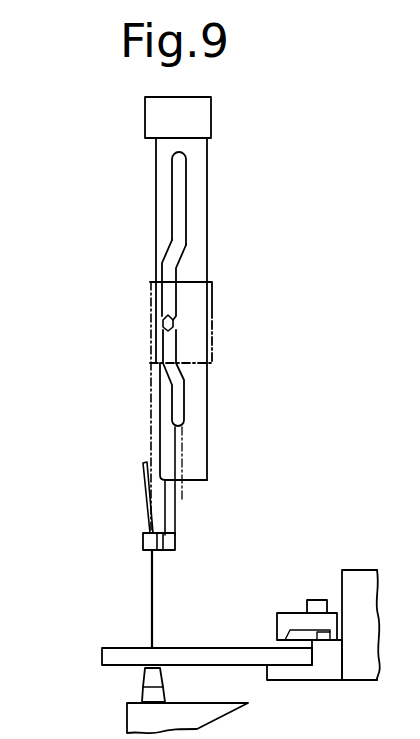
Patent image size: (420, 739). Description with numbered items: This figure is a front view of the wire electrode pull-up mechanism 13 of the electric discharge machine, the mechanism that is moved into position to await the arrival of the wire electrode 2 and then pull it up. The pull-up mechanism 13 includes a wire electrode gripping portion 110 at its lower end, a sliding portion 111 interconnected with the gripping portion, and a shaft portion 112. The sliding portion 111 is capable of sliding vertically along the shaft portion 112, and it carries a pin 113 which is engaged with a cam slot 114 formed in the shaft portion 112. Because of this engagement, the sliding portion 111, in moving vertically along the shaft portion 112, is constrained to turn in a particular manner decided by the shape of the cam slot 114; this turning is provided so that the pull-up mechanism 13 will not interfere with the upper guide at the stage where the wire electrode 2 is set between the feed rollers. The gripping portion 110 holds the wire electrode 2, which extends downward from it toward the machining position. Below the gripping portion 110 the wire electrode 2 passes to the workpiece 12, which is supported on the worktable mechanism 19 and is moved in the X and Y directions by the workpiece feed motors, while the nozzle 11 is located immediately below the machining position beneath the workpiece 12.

The wire electrode pull-up mechanism 13 is at (126, 267).
The cam slot 114 is at (177, 176).
The sliding portion 111 is at (215, 293).
The pin 113 is at (173, 323).
The shaft portion 112 is at (195, 438).
The wire electrode gripping portion 110 is at (143, 540).
The wire electrode 2 is at (153, 607).
The workpiece 12 is at (190, 663).
The nozzle 11 is at (141, 675).
The worktable mechanism 19 is at (353, 673).